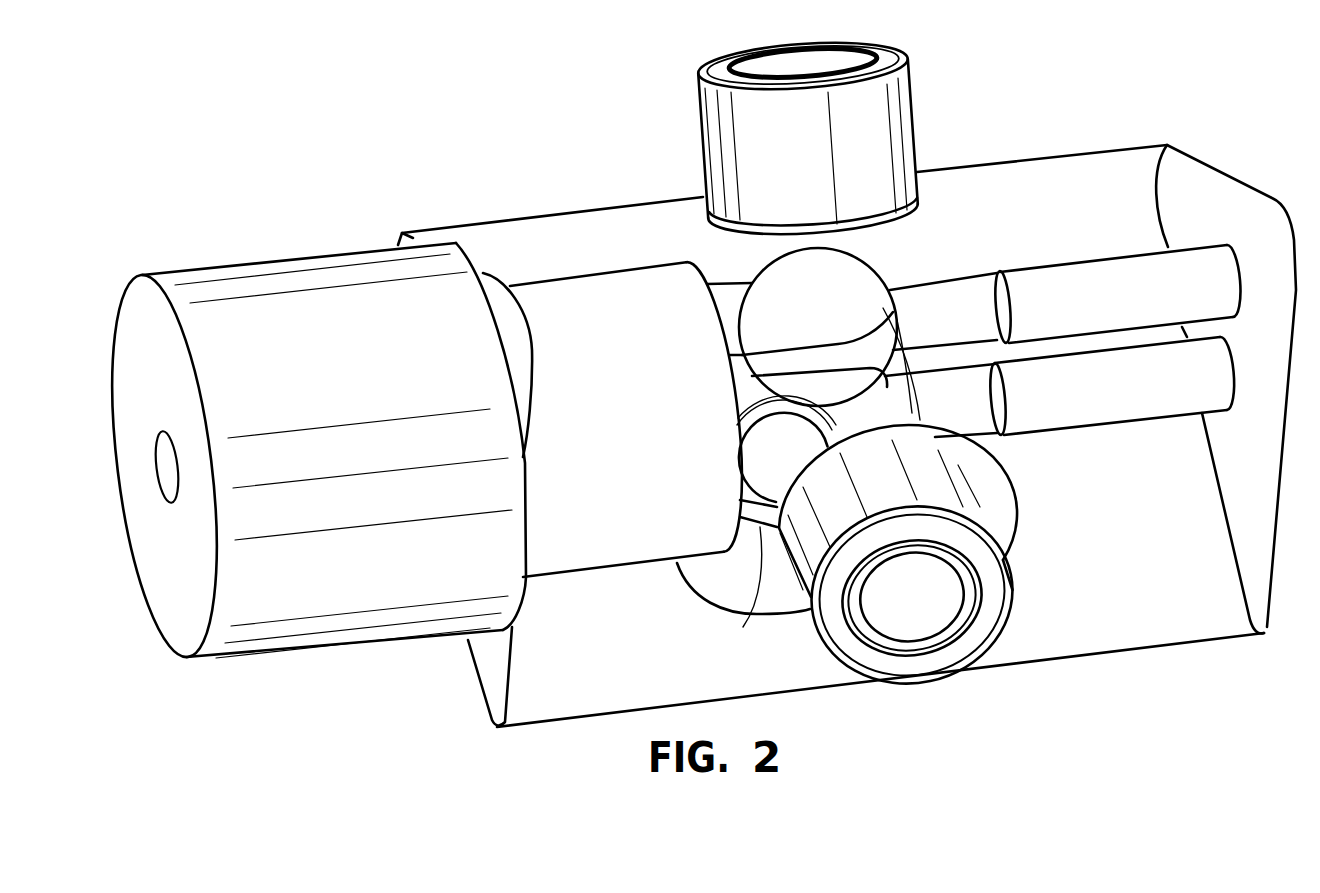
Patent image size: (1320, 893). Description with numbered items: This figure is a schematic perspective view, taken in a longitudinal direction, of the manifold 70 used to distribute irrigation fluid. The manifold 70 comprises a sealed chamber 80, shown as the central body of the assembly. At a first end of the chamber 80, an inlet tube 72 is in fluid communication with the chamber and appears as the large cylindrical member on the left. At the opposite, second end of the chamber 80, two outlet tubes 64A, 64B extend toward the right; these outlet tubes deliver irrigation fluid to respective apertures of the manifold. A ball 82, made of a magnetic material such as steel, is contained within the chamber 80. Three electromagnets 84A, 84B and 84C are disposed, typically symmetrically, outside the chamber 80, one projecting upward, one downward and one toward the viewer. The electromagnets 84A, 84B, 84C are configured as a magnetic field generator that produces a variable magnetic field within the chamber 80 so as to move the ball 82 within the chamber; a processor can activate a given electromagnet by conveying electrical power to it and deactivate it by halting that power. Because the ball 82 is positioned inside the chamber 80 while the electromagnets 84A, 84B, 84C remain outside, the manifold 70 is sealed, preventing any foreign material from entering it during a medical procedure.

The manifold 70 is at (389, 163).
The inlet tube 72 is at (171, 595).
The sealed chamber 80 is at (737, 620).
The ball 82 is at (855, 285).
The outlet tube 64A is at (1093, 283).
The outlet tube 64B is at (1098, 403).
The electromagnet 84A is at (740, 135).
The electromagnet 84B is at (737, 583).
The electromagnet 84C is at (907, 663).